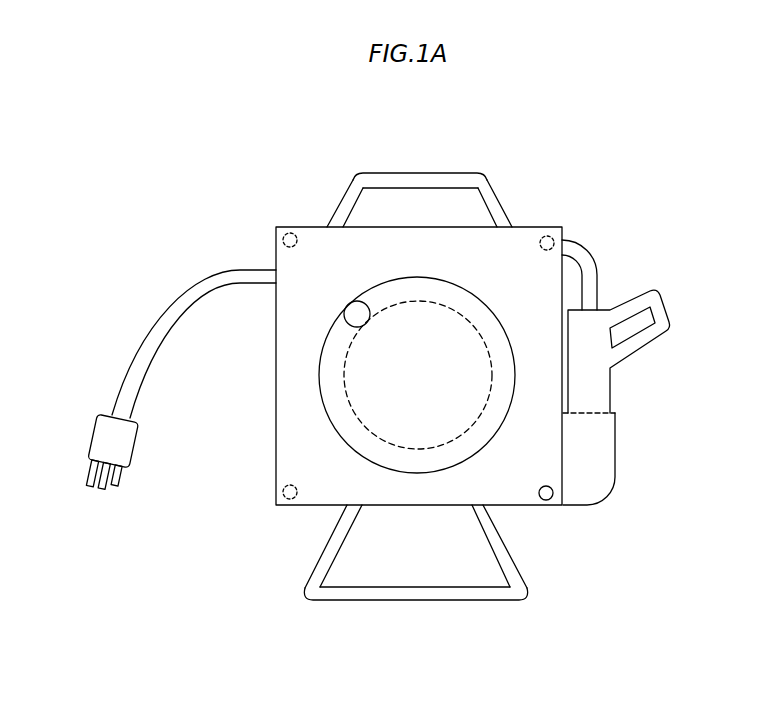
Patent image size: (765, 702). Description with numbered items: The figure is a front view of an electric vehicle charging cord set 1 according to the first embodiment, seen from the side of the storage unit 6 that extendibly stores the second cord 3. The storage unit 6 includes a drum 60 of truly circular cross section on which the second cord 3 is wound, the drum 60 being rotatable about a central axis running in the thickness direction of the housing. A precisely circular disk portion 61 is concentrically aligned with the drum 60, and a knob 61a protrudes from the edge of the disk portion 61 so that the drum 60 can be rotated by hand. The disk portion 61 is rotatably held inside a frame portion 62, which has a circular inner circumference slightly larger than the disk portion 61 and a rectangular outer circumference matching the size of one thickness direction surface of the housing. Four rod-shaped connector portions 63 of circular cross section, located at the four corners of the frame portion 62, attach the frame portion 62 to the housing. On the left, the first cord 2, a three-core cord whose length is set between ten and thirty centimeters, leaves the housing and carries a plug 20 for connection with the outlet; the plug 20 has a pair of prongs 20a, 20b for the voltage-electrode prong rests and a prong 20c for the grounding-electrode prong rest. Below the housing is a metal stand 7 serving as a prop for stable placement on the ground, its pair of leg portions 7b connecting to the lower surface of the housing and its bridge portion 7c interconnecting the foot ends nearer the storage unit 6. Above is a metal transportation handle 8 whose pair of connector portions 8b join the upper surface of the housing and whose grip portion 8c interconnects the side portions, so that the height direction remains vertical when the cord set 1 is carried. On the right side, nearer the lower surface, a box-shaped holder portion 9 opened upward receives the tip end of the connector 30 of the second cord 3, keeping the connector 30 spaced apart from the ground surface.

The cord set 1 is at (255, 129).
The first cord 2 is at (168, 315).
The second cord 3 is at (583, 250).
The storage unit 6 is at (518, 498).
The stand 7 is at (411, 583).
The leg portions 7b is at (333, 553).
The bridge portion 7c is at (455, 597).
The transportation handle 8 is at (416, 171).
The connector portions 8b is at (342, 210).
The grip portion 8c is at (398, 180).
The holder portion 9 is at (597, 472).
The plug 20 is at (121, 497).
The prong 20a is at (88, 490).
The prong 20b is at (105, 497).
The prong 20c is at (120, 480).
The connector 30 is at (602, 385).
The drum 60 is at (460, 353).
The disk portion 61 is at (338, 358).
The knob 61a is at (350, 313).
The frame portion 62 is at (523, 463).
The connector portions 63 is at (283, 227).